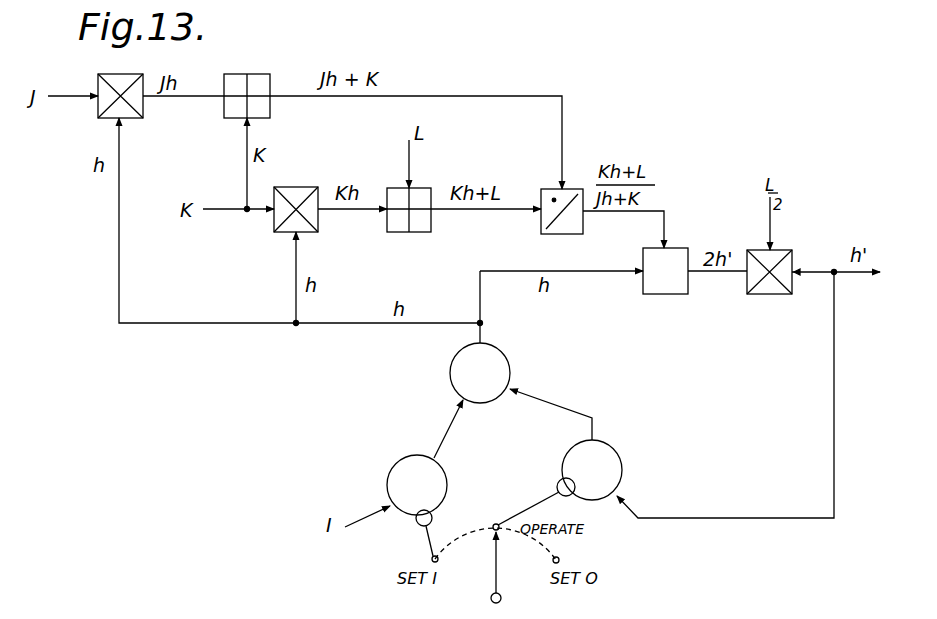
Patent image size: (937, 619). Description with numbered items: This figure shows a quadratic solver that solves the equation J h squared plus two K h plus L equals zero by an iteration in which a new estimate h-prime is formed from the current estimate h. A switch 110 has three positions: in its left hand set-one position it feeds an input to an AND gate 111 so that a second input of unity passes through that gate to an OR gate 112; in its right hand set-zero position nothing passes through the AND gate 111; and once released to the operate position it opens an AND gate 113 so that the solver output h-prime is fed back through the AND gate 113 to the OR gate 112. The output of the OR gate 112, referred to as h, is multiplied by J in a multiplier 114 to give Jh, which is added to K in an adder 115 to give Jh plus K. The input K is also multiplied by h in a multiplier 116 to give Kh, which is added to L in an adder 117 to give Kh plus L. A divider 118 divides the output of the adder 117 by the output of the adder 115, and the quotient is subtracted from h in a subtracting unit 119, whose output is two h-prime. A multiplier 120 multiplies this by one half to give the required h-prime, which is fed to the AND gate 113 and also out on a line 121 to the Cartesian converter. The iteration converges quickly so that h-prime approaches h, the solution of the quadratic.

The switch 110 is at (498, 574).
The AND gate 111 is at (392, 464).
The OR gate 112 is at (503, 358).
The AND gate 113 is at (612, 463).
The multiplier 114 is at (137, 108).
The adder 115 is at (257, 76).
The multiplier 116 is at (275, 218).
The adder 117 is at (417, 228).
The divider 118 is at (577, 221).
The subtracting unit 119 is at (678, 253).
The multiplier 120 is at (792, 252).
The line 121 is at (852, 274).